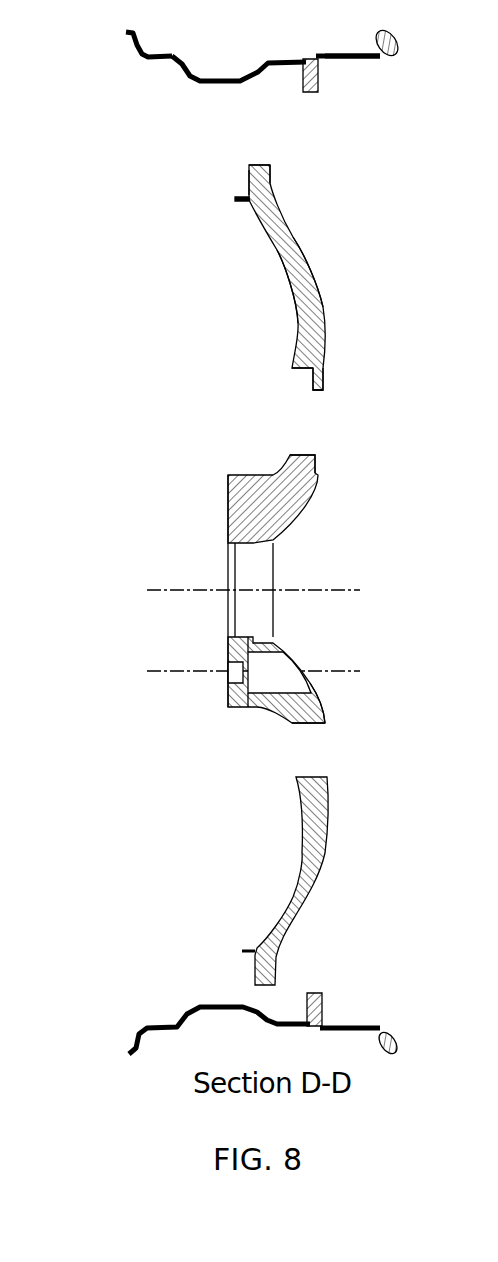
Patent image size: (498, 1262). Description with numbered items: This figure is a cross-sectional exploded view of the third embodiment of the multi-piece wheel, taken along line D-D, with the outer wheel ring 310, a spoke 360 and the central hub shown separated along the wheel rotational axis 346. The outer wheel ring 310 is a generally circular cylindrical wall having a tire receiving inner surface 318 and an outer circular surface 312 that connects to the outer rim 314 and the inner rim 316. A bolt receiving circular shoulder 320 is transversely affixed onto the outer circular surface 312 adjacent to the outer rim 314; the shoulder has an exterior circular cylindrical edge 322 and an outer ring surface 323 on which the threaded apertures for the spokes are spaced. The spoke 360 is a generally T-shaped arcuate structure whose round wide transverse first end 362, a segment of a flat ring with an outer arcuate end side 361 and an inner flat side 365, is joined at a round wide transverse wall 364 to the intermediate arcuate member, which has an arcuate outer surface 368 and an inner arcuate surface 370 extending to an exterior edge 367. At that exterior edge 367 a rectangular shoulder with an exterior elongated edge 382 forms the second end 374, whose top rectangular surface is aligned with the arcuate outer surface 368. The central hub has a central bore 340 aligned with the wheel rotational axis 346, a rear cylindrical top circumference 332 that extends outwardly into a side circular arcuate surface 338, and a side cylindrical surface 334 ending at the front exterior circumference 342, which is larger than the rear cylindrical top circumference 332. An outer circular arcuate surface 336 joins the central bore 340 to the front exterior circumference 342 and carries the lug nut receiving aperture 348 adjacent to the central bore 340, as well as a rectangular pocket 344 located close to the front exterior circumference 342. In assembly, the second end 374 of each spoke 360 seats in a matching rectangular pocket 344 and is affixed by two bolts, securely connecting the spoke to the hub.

The outer wheel ring 310 is at (183, 978).
The outer circular surface 312 is at (353, 60).
The outer rim 314 is at (394, 32).
The inner rim 316 is at (128, 36).
The tire receiving inner surface 318 is at (334, 54).
The bolt receiving circular shoulder 320 is at (295, 83).
The exterior circular cylindrical edge 322 is at (310, 93).
The outer ring surface 323 is at (318, 78).
The rear cylindrical top circumference 332 is at (228, 473).
The side cylindrical surface 334 is at (315, 724).
The outer circular arcuate surface 336 is at (324, 703).
The side circular arcuate surface 338 is at (257, 710).
The central bore 340 is at (247, 602).
The front exterior circumference 342 is at (303, 512).
The rectangular pocket 344 is at (318, 460).
The wheel rotational axis 346 is at (282, 623).
The lug nut receiving aperture 348 is at (300, 682).
The spoke 360 is at (339, 274).
The outer arcuate end side 361 is at (270, 163).
The round wide transverse first end 362 is at (280, 171).
The round wide transverse wall 364 is at (237, 200).
The inner flat side 365 is at (247, 173).
The exterior edge 367 is at (303, 369).
The arcuate outer surface 368 is at (308, 255).
The inner arcuate surface 370 is at (292, 263).
The second end 374 is at (330, 377).
The exterior elongated edge 382 is at (319, 391).